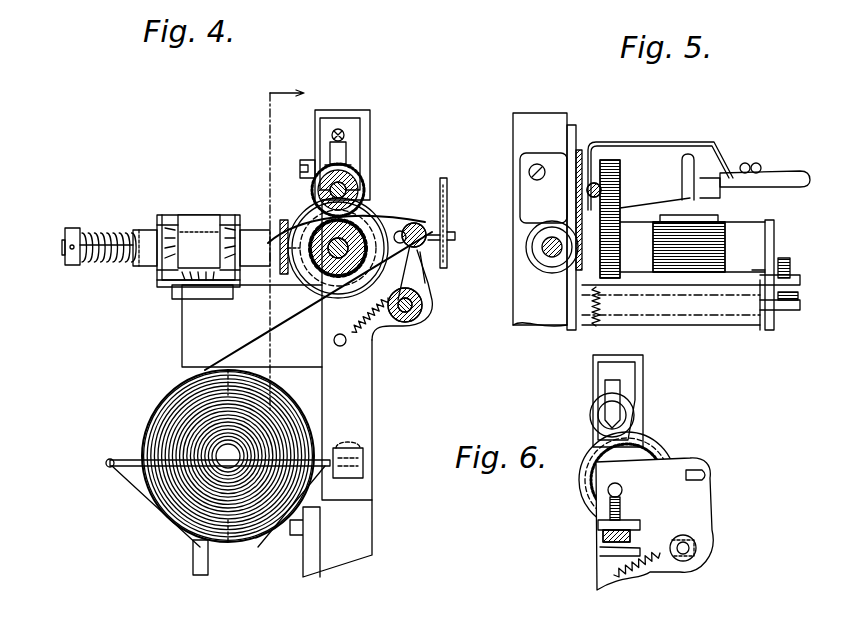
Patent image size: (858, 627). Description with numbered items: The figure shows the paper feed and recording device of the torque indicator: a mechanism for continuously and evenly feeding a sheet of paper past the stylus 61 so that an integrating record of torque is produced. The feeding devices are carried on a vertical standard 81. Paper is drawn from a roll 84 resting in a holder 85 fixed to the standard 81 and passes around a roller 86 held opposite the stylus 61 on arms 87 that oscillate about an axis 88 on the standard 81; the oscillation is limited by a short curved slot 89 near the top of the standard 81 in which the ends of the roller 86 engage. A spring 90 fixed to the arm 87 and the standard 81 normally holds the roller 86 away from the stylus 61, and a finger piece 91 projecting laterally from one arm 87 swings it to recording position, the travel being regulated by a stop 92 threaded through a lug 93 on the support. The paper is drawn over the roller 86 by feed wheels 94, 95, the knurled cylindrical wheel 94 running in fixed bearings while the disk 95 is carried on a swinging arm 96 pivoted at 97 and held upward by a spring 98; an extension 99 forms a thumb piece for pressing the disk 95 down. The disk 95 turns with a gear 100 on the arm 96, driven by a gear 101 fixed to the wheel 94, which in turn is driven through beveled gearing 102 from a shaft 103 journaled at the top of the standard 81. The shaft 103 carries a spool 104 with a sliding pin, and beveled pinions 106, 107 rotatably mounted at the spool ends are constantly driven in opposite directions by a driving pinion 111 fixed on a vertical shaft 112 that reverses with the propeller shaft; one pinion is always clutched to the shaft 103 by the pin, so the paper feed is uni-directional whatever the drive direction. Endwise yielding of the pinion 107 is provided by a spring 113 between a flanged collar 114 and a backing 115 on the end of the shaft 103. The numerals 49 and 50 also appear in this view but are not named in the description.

In FIG. 4, the shaft 49 is at (748, 0).
In FIG. 4, the lever 50 is at (503, 0).
In FIG. 4, the stylus 61 is at (447, 232).
In FIG. 4, the vertical standard 81 is at (358, 412).
In FIG. 4, the roll 84 is at (145, 432).
In FIG. 4, the holder 85 is at (260, 542).
In FIG. 4, the roller 86 is at (425, 226).
In FIG. 4, the arms 87 is at (428, 277).
In FIG. 4, the axis 88 is at (424, 308).
In FIG. 4, the curved slot 89 is at (395, 220).
In FIG. 4, the spring 90 is at (372, 330).
In FIG. 5, the spring 90 is at (596, 328).
In FIG. 5, the finger piece 91 is at (793, 312).
In FIG. 6, the finger piece 91 is at (620, 565).
In FIG. 5, the stop 92 is at (796, 290).
In FIG. 6, the stop 92 is at (605, 535).
In FIG. 5, the lug 93 is at (772, 245).
In FIG. 6, the lug 93 is at (598, 522).
In FIG. 4, the feed wheel 94 is at (292, 270).
In FIG. 5, the feed wheel 94 is at (698, 272).
In FIG. 4, the feed wheel 95 is at (306, 238).
In FIG. 5, the feed wheel 95 is at (690, 160).
In FIG. 5, the swinging arm 96 is at (748, 166).
In FIG. 5, the pivot 97 is at (596, 183).
In FIG. 4, the spring 98 is at (340, 130).
In FIG. 5, the spring 98 is at (660, 142).
In FIG. 5, the extension 99 is at (792, 172).
In FIG. 4, the gear 100 is at (300, 168).
In FIG. 5, the gear 100 is at (612, 165).
In FIG. 5, the gear 101 is at (625, 268).
In FIG. 4, the beveled gearing 102 is at (283, 228).
In FIG. 5, the beveled gearing 102 is at (578, 280).
In FIG. 4, the shaft 103 is at (230, 224).
In FIG. 4, the spool 104 is at (195, 236).
In FIG. 4, the beveled pinion 106 is at (182, 298).
In FIG. 4, the beveled pinion 107 is at (160, 280).
In FIG. 4, the driving pinion 111 is at (165, 290).
In FIG. 4, the vertical shaft 112 is at (182, 370).
In FIG. 4, the spring 113 is at (85, 234).
In FIG. 4, the flanged collar 114 is at (140, 231).
In FIG. 4, the backing 115 is at (70, 266).